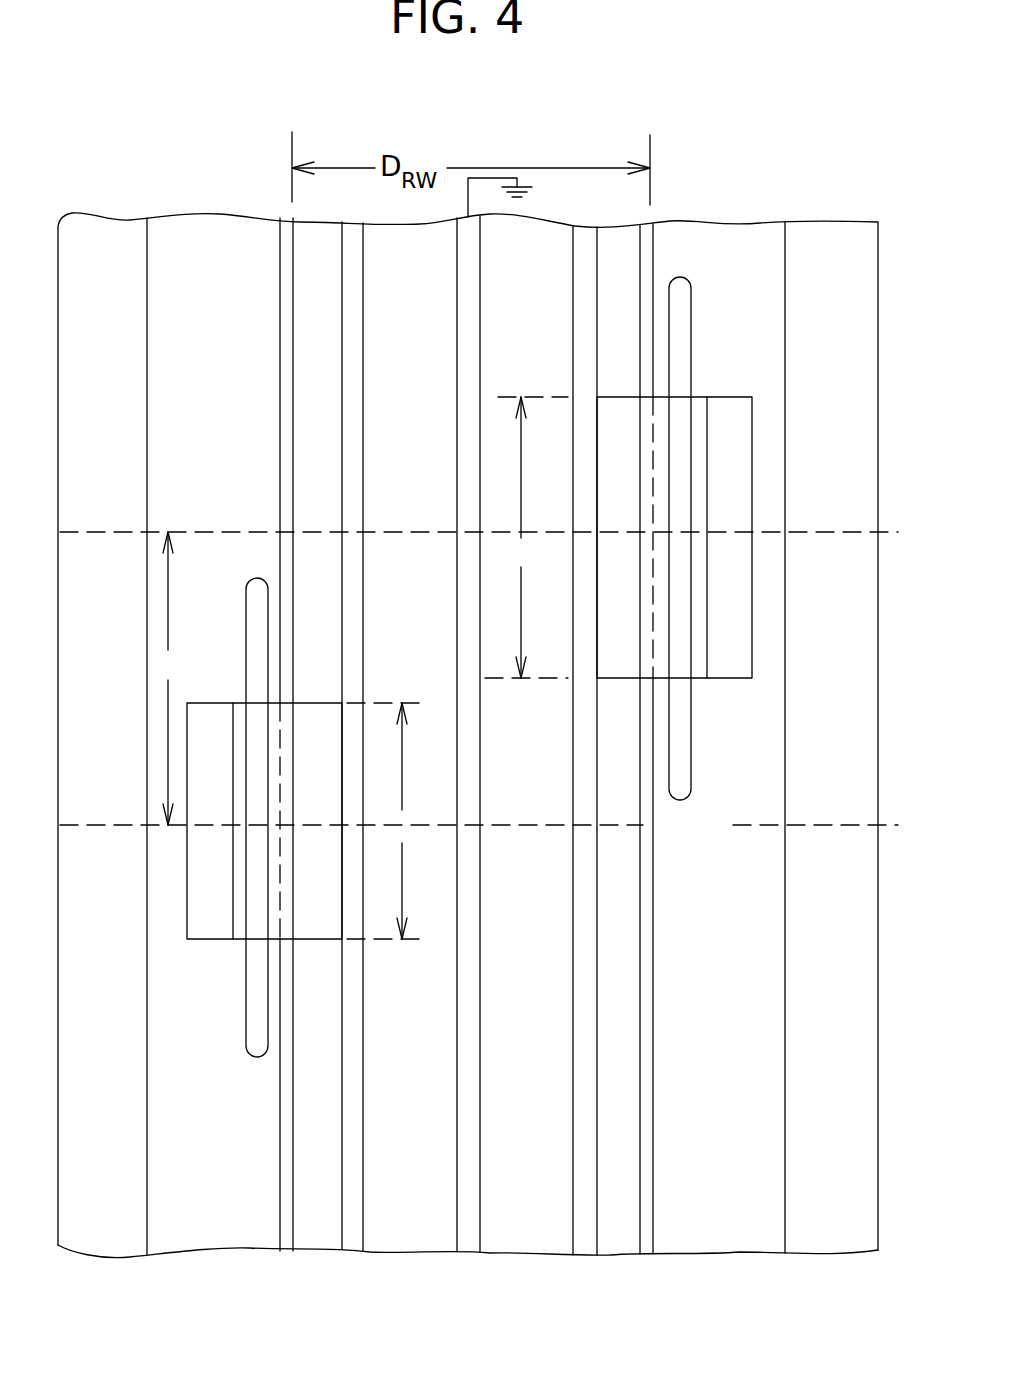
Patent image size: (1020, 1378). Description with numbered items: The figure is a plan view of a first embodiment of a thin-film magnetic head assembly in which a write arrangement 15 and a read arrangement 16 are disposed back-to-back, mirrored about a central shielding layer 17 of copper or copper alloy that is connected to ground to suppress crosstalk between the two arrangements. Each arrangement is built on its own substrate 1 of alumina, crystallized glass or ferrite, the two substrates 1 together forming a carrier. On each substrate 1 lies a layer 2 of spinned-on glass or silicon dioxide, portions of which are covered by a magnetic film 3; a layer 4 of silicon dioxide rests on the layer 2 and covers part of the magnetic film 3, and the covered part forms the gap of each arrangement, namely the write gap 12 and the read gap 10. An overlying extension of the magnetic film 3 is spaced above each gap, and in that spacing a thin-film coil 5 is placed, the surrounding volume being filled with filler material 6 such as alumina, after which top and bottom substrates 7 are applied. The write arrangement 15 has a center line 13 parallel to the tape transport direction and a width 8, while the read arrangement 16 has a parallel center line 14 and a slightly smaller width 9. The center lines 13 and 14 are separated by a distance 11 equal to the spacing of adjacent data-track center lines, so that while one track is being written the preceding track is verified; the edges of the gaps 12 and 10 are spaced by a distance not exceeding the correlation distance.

The substrate 1 is at (417, 1237).
The layer of spinned-on glass or silicon dioxide 2 is at (360, 1237).
The magnetic film 3 is at (313, 1218).
The layer of silicon dioxide 4 is at (290, 1242).
The thin-film coil 5 is at (255, 1038).
The filler material 6 is at (210, 1227).
The top and bottom substrates 7 is at (87, 1237).
The width of write arrangement 8 is at (526, 537).
The width of read arrangement 9 is at (383, 821).
The read gap 10 is at (287, 800).
The distance between center lines 11 is at (172, 678).
The write gap 12 is at (647, 495).
The center line of write arrangement 13 is at (237, 528).
The center line of read arrangement 14 is at (532, 827).
The write arrangement 15 is at (729, 385).
The read arrangement 16 is at (233, 950).
The shielding layer 17 is at (465, 1230).